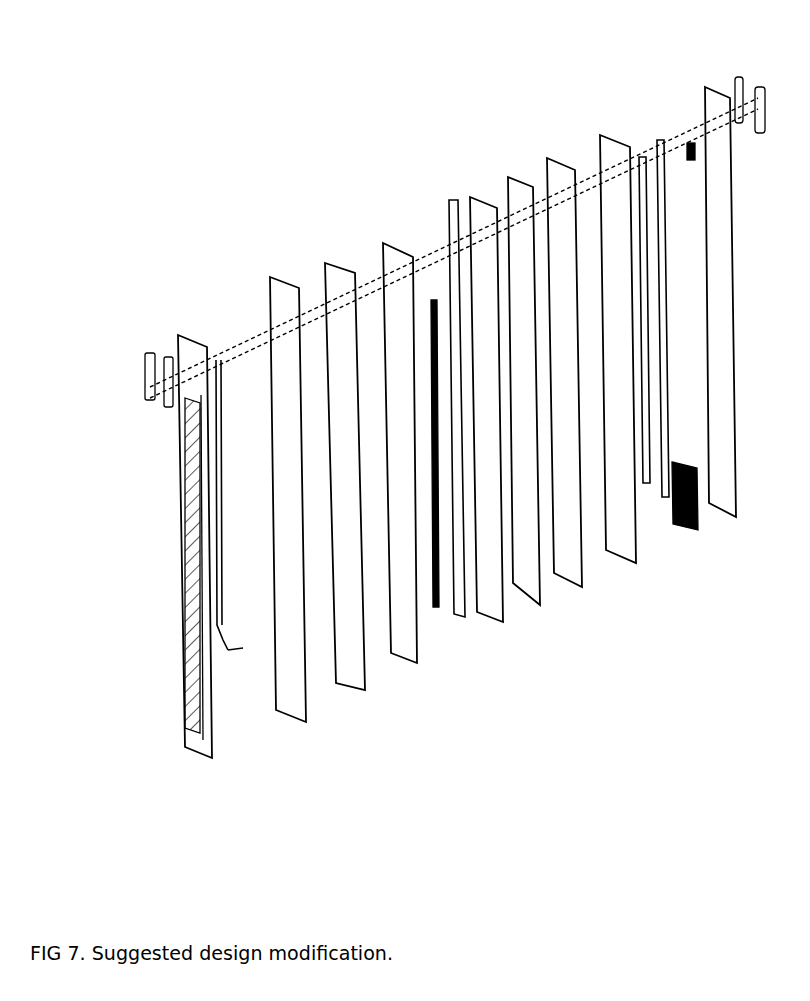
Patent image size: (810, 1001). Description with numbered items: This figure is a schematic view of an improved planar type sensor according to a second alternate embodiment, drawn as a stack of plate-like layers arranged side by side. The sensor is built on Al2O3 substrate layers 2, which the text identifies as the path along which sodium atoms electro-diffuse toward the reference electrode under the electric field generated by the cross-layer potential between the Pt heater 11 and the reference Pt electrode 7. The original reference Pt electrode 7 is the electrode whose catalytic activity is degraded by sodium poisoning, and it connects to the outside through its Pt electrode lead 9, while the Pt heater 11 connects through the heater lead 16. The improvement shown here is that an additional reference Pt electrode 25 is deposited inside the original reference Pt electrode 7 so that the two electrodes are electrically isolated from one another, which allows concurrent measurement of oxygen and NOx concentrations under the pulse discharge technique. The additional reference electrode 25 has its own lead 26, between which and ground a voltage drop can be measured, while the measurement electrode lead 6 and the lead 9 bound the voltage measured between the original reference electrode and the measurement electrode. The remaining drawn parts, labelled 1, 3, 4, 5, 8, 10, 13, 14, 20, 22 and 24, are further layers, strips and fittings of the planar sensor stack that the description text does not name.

The plate 1 is at (342, 268).
The Al2O3 substrate layers 2 is at (578, 603).
The end plate 3 is at (205, 760).
The spacer 4 is at (243, 648).
The pin 5 is at (151, 353).
The lead 6 is at (217, 360).
The reference Pt electrode 7 is at (436, 640).
The pin 8 is at (166, 357).
The Pt electrode lead 9 is at (432, 298).
The strip 10 is at (451, 198).
The Pt heater 11 is at (682, 530).
The retaining pins 13 is at (738, 78).
The strip 14 is at (660, 158).
The heater lead 16 is at (643, 157).
The plate 20 is at (414, 668).
The plate 22 is at (289, 715).
The hatched layer 24 is at (182, 724).
The additional reference Pt electrode 25 is at (435, 610).
The lead 26 is at (432, 300).